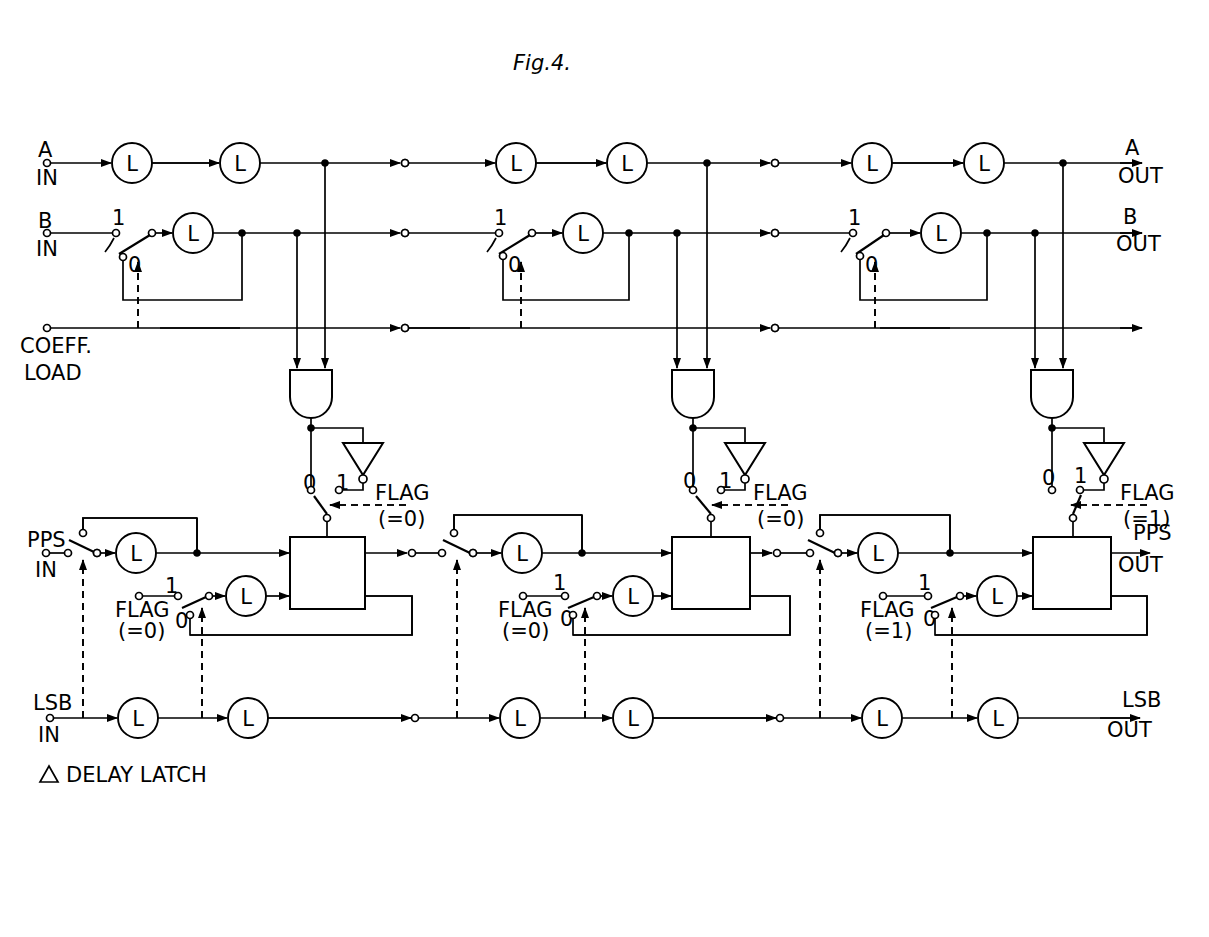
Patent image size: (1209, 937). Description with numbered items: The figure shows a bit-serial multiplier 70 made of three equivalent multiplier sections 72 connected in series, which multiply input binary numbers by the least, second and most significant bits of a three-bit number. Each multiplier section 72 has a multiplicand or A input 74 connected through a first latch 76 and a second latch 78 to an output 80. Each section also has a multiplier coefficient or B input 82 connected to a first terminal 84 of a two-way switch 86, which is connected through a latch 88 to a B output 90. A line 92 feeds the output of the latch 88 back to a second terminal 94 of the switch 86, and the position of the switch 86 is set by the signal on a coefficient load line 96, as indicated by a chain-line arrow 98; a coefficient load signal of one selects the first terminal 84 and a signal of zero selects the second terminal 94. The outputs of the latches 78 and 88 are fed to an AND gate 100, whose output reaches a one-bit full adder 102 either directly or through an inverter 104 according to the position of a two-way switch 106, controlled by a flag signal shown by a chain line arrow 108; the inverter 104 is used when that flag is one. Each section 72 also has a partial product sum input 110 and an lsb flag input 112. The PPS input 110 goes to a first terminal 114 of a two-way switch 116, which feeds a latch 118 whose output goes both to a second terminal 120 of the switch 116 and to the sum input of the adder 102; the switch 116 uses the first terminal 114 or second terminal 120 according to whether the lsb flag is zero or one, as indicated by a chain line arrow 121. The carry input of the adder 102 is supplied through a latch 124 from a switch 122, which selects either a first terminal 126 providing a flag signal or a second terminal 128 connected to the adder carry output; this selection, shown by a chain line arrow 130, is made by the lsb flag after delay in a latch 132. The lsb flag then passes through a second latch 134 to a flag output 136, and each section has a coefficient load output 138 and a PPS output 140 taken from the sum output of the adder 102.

The bit-serial multiplier 70 is at (580, 437).
The multiplier section 72 is at (197, 159).
The A input 74 is at (49, 159).
The first latch 76 is at (141, 147).
The second latch 78 is at (250, 147).
The output 80 is at (403, 159).
The B input 82 is at (49, 229).
The first terminal 84 is at (105, 252).
The two-way switch 86 is at (133, 246).
The latch 88 is at (203, 218).
The B output 90 is at (403, 229).
The line 92 is at (193, 300).
The second terminal 94 is at (120, 263).
The coefficient load line 96 is at (207, 331).
The chain-line arrow 98 is at (141, 333).
The AND gate 100 is at (290, 395).
The one-bit full adder 102 is at (325, 610).
The inverter 104 is at (378, 443).
The two-way switch 106 is at (308, 491).
The chain line arrow 108 is at (417, 497).
The partial product sum input 110 is at (57, 556).
The lsb flag input 112 is at (60, 721).
The first terminal 114 is at (80, 530).
The two-way switch 116 is at (96, 549).
The latch 118 is at (134, 533).
The second terminal 120 is at (82, 514).
The chain line arrow 121 is at (85, 660).
The switch 122 is at (200, 594).
The latch 124 is at (253, 614).
The first terminal 126 is at (182, 552).
The second terminal 128 is at (189, 620).
The chain line arrow 130 is at (204, 660).
The latch 132 is at (153, 723).
The second latch 134 is at (262, 733).
The flag output 136 is at (404, 723).
The coefficient load output 138 is at (403, 332).
The PPS output 140 is at (411, 605).